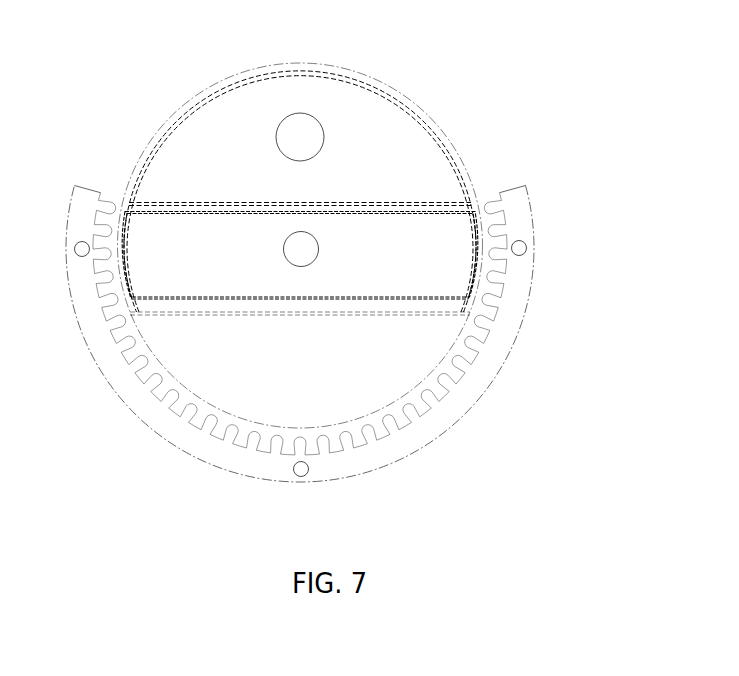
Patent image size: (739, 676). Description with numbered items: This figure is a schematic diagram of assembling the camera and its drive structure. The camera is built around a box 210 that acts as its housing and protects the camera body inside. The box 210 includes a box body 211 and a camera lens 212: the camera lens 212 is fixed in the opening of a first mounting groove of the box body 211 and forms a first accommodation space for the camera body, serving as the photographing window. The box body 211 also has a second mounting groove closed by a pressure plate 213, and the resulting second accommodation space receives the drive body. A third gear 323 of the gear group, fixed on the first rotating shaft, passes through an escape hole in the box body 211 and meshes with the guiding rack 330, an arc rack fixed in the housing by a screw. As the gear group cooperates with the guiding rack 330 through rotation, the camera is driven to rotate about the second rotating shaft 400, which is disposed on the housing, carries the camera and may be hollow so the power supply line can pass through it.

The box 210 is at (505, 42).
The box body 211 is at (437, 123).
The camera lens 212 is at (383, 125).
The pressure plate 213 is at (440, 230).
The third gear 323 is at (500, 248).
The guiding rack 330 is at (397, 447).
The second rotating shaft 400 is at (302, 253).